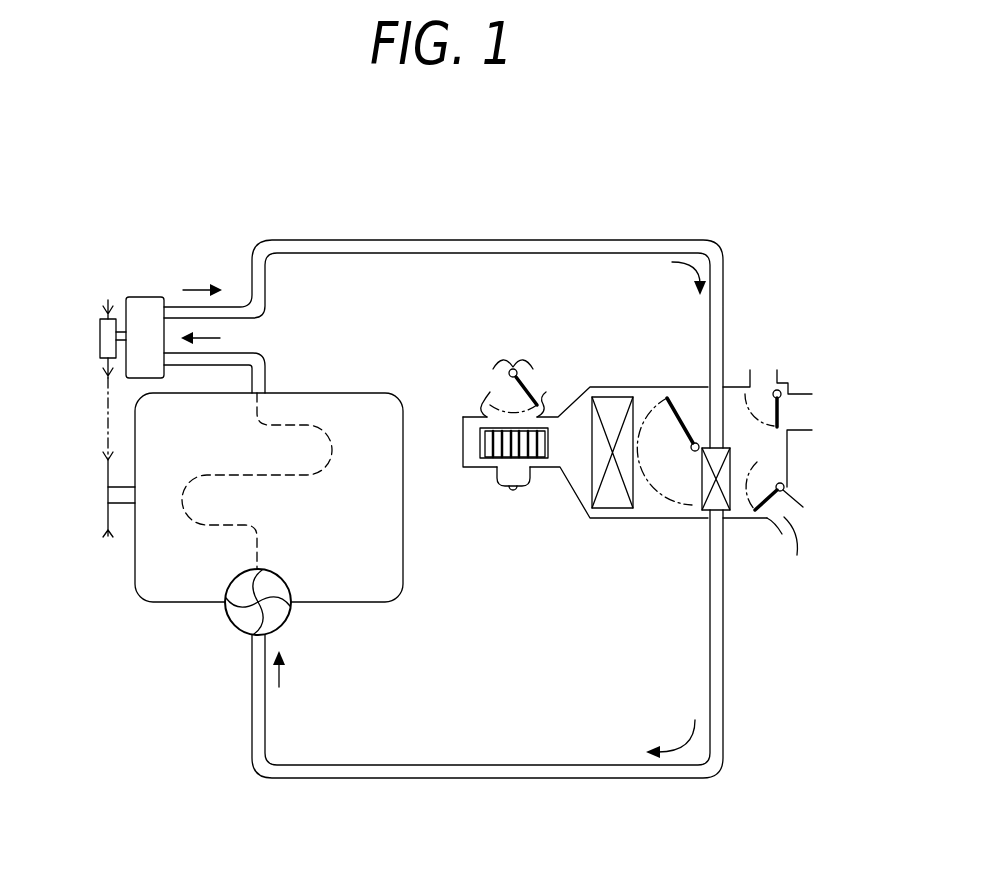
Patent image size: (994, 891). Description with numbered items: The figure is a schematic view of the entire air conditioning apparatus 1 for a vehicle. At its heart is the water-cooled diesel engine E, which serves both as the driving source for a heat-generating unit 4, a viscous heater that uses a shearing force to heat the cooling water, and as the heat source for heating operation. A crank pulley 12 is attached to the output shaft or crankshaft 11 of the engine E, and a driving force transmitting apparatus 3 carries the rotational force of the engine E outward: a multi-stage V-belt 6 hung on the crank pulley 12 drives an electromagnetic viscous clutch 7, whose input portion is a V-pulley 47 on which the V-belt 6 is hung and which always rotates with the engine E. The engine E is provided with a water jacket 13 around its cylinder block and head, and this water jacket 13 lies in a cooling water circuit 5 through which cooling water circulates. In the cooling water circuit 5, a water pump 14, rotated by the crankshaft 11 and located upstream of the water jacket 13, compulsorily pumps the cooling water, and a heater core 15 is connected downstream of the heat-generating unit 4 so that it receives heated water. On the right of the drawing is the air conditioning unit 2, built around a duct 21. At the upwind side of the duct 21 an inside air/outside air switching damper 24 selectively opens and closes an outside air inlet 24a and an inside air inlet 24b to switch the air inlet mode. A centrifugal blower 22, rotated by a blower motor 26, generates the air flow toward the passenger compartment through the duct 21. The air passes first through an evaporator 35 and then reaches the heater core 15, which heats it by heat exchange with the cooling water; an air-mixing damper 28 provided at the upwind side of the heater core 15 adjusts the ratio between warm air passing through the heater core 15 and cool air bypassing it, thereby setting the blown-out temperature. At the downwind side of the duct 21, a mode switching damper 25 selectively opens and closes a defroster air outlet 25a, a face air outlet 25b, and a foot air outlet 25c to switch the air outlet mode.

The air conditioning apparatus 1 is at (166, 211).
The air conditioning unit 2 is at (810, 360).
The driving force transmitting apparatus 3 is at (89, 277).
The heat-generating unit 4 is at (145, 297).
The V-pulley 47 is at (104, 304).
The electromagnetic clutch (viscous clutch) 7 is at (100, 345).
The V-belt 6 is at (108, 417).
The crank pulley 12 is at (104, 535).
The output shaft (crankshaft) 11 is at (125, 505).
The water jacket 13 is at (305, 424).
The water pump 14 is at (237, 625).
The engine E is at (342, 603).
The cooling water circuit 5 is at (390, 240).
The duct 21 is at (560, 477).
The blower 22 is at (480, 440).
The inside air/outside air switching damper 24 is at (531, 392).
The outside air inlet 24a is at (487, 385).
The inside air inlet 24b is at (542, 384).
The blower motor 26 is at (496, 487).
The evaporator 35 is at (605, 510).
The air-mixing damper 28 is at (685, 440).
The heater core 15 is at (722, 503).
The mode switching damper 25 is at (782, 405).
The defroster air outlet 25a is at (758, 380).
The face air outlet 25b is at (799, 418).
The foot air outlet 25c is at (792, 549).